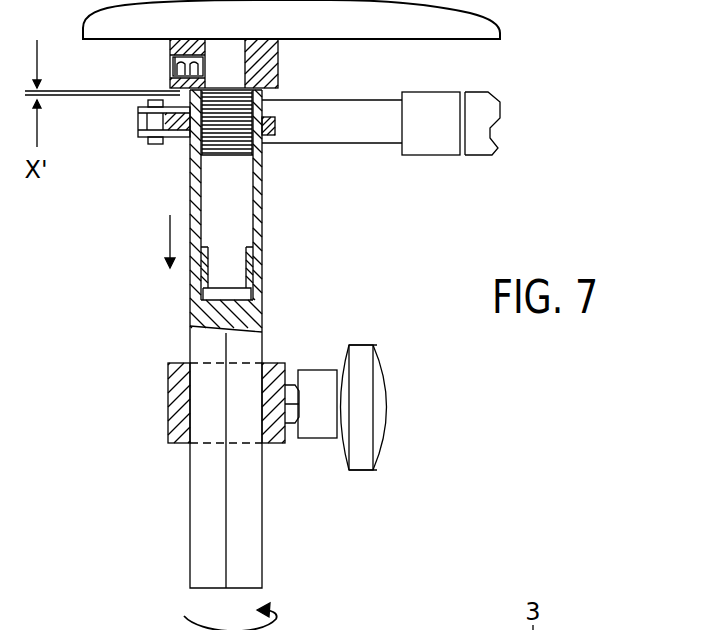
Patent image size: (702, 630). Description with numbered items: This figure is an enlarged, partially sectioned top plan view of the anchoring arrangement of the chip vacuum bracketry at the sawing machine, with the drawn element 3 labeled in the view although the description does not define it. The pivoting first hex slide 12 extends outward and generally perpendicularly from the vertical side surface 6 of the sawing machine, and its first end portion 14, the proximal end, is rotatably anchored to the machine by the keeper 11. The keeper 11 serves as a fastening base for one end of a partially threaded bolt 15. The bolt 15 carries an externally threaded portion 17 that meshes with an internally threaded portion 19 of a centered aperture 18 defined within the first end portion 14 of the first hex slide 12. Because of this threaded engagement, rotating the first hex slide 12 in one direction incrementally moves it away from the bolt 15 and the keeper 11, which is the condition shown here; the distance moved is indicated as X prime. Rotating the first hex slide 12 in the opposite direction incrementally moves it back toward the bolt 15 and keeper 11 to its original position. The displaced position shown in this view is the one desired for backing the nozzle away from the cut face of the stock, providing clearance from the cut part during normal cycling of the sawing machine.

The body slot 3 is at (220, 45).
The side surface 6 is at (353, 25).
The keeper 11 is at (262, 60).
The first hex slide 12 is at (263, 348).
The first end portion 14 is at (188, 152).
The partially threaded bolt 15 is at (235, 173).
The externally threaded portion 17 is at (232, 108).
The centered aperture 18 is at (254, 200).
The internally threaded portion 19 is at (253, 133).